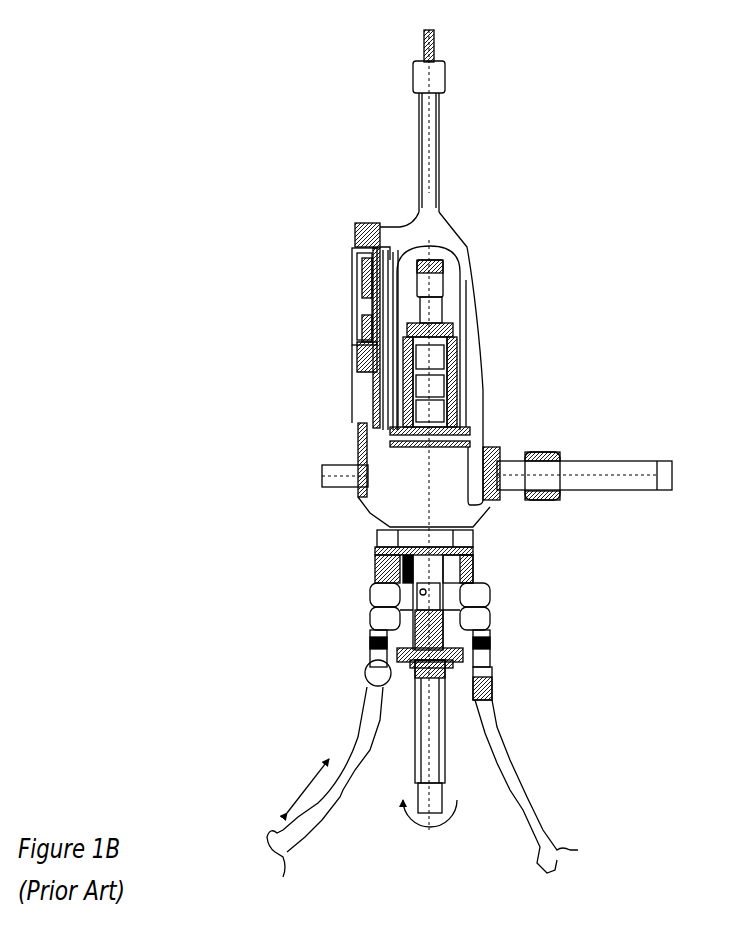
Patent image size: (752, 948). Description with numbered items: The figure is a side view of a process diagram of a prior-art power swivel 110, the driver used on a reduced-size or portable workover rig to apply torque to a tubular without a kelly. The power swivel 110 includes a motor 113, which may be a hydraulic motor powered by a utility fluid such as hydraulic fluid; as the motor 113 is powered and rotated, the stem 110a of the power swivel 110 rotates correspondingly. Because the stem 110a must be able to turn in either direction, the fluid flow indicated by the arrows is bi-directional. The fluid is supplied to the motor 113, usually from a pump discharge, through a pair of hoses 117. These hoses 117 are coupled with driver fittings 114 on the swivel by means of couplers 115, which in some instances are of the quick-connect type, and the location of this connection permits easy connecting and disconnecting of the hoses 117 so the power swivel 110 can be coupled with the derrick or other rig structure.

The power swivel 110 is at (333, 473).
The stem 110a is at (433, 767).
The motor 113 is at (455, 566).
The driver fittings 114 is at (455, 626).
The couplers 115 is at (478, 657).
The hoses 117 is at (485, 728).